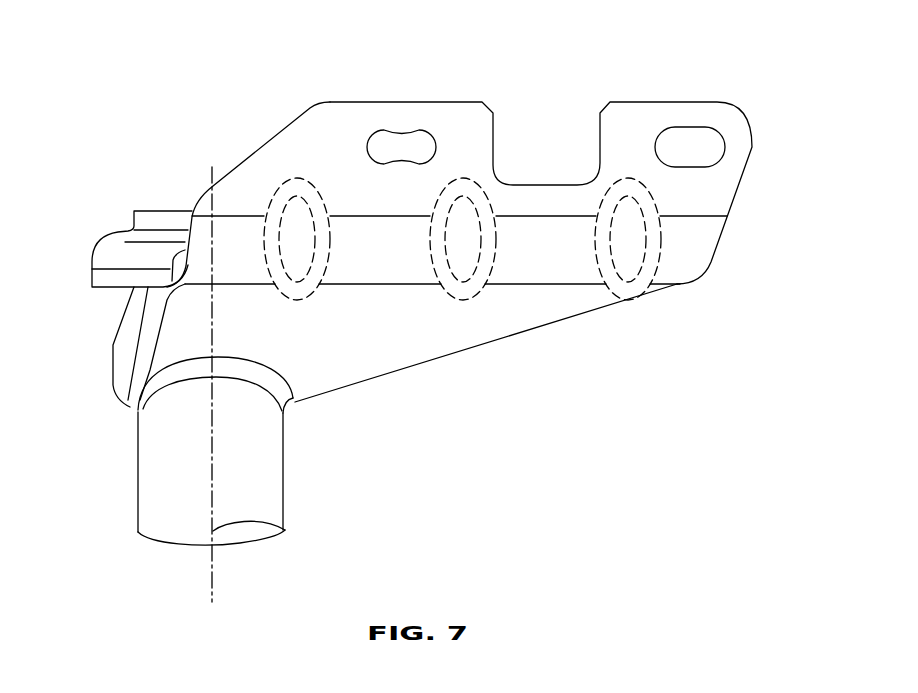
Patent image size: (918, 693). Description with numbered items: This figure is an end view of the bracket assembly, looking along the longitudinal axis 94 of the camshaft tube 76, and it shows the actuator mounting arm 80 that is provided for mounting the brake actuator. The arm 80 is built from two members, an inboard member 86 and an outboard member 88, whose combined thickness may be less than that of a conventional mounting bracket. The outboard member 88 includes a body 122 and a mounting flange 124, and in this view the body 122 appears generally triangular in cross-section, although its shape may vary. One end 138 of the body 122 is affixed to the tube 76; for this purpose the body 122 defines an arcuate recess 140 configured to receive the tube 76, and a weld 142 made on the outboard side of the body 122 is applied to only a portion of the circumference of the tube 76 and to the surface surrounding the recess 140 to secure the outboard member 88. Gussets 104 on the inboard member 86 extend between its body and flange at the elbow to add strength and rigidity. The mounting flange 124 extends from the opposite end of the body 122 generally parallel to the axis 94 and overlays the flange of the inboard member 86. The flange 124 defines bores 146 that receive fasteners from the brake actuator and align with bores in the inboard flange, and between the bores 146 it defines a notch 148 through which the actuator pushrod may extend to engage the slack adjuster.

The actuator mounting arm 80 is at (725, 92).
The inboard member 86 is at (160, 197).
The outboard member 88 is at (553, 338).
The camshaft tube 76 is at (177, 487).
The longitudinal axis 94 is at (212, 573).
The gussets 104 is at (336, 238).
The body 122 is at (452, 317).
The mounting flange 124 is at (703, 193).
The end 138 is at (299, 413).
The arcuate recess 140 is at (228, 357).
The weld 142 is at (137, 410).
The bores 146 is at (388, 147).
The notch 148 is at (531, 146).